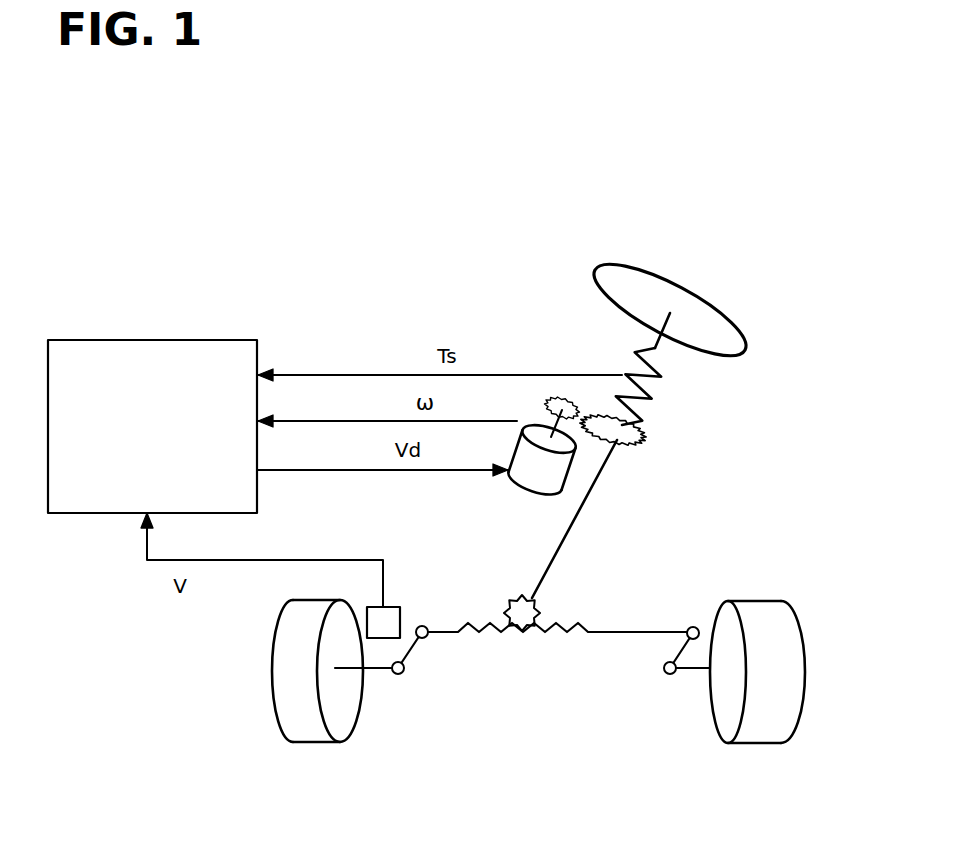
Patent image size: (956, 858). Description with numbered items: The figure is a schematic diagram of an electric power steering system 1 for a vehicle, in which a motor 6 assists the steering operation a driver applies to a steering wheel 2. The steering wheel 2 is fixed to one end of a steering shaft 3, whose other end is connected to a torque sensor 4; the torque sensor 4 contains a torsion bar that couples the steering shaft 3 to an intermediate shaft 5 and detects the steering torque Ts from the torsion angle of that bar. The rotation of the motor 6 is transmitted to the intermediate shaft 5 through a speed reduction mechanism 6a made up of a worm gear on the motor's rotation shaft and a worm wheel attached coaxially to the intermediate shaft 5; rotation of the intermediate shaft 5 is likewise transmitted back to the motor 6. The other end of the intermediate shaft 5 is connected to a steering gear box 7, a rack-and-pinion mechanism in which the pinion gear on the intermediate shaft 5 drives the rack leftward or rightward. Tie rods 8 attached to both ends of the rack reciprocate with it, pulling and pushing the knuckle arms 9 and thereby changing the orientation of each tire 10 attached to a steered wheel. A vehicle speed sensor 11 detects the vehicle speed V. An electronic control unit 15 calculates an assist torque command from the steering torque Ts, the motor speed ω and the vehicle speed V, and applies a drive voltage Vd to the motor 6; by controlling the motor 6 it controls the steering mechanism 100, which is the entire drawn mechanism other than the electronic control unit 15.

The electric power steering system 1 is at (688, 190).
The steering mechanism 100 is at (543, 323).
The steering wheel 2 is at (723, 310).
The steering shaft 3 is at (660, 336).
The torque sensor 4 is at (652, 378).
The intermediate shaft 5 is at (588, 488).
The motor 6 is at (523, 480).
The speed reduction mechanism 6a is at (648, 430).
The steering gear box 7 is at (556, 608).
The tie rod 8 is at (447, 634).
The knuckle arm 9 is at (385, 672).
The tire 10 is at (272, 668).
The vehicle speed sensor 11 is at (388, 607).
The electronic control unit 15 is at (183, 340).